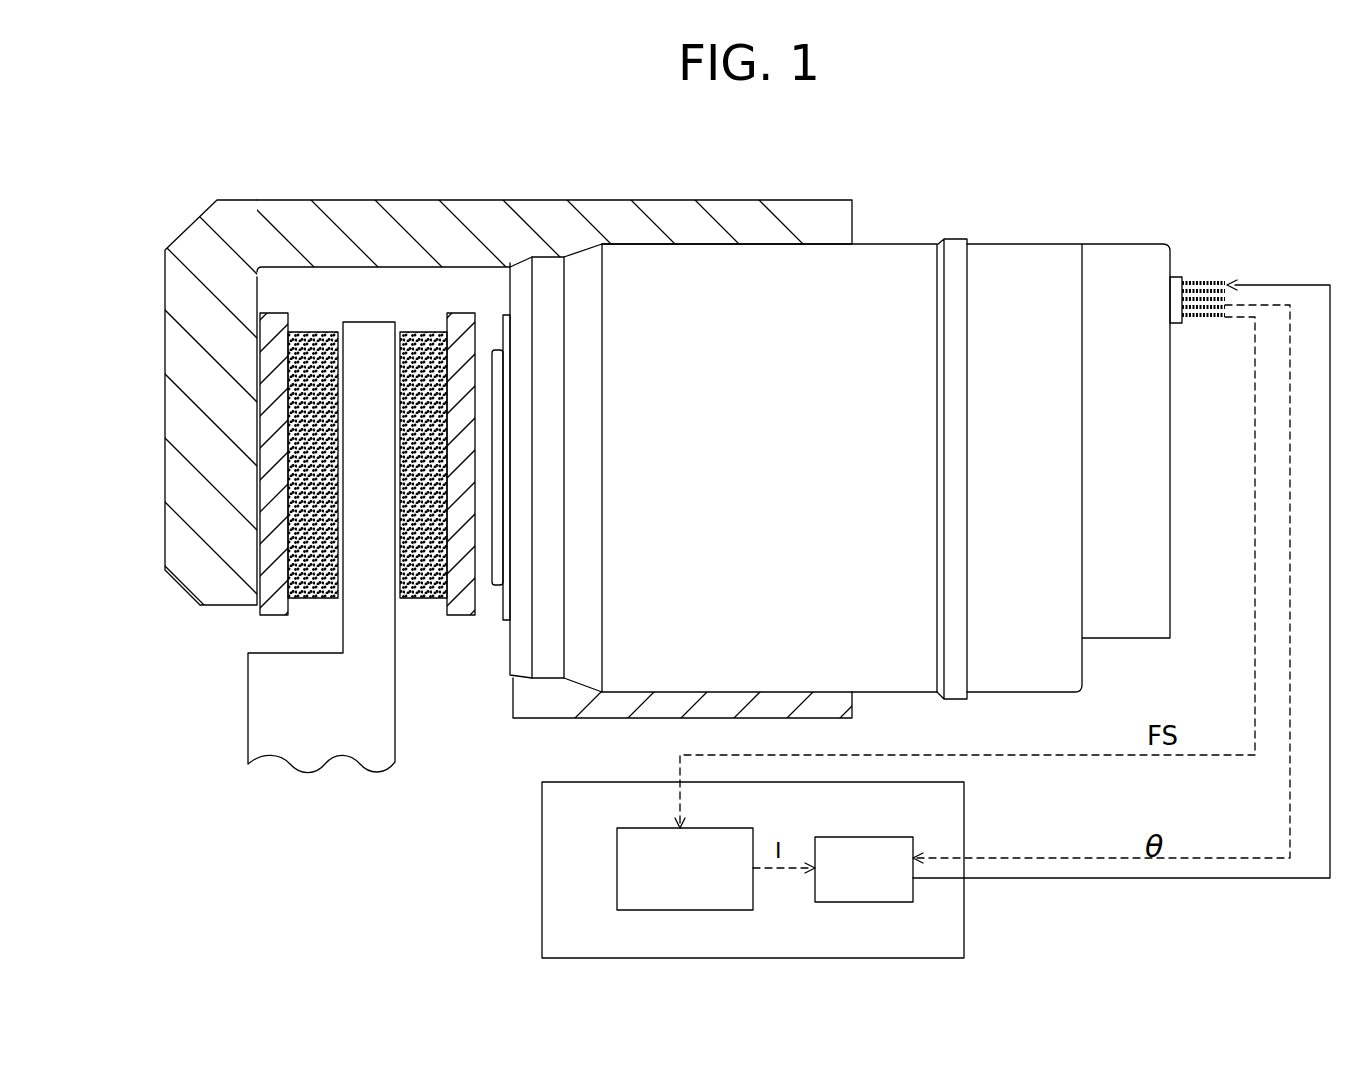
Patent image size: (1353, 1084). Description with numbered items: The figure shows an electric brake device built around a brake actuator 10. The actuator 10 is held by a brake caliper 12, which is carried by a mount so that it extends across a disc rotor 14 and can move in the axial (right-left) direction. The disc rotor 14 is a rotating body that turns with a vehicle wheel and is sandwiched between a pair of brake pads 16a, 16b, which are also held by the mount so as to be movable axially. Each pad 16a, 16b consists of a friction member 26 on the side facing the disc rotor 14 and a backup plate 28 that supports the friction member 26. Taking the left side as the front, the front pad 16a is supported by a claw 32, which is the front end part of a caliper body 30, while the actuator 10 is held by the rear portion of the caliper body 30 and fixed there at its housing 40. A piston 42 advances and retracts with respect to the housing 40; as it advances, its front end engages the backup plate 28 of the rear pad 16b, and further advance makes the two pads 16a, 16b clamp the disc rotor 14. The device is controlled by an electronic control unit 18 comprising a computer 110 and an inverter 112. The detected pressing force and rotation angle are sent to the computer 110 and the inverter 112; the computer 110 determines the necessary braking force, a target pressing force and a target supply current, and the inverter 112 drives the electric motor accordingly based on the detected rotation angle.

The brake actuator 10 is at (971, 175).
The brake caliper 12 is at (524, 88).
The disc rotor 14 is at (262, 695).
The front brake pad 16a is at (302, 274).
The rear brake pad 16b is at (435, 274).
The electronic control unit 18 is at (570, 781).
The friction member 26 is at (317, 337).
The backup plate 28 is at (267, 313).
The caliper body 30 is at (555, 202).
The claw 32 is at (183, 497).
The housing 40 is at (878, 267).
The piston 42 is at (497, 585).
The computer 110 is at (648, 910).
The inverter 112 is at (883, 897).